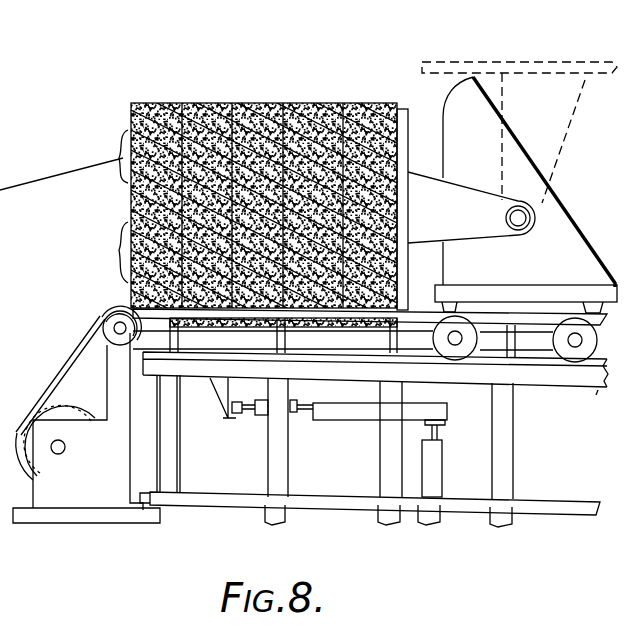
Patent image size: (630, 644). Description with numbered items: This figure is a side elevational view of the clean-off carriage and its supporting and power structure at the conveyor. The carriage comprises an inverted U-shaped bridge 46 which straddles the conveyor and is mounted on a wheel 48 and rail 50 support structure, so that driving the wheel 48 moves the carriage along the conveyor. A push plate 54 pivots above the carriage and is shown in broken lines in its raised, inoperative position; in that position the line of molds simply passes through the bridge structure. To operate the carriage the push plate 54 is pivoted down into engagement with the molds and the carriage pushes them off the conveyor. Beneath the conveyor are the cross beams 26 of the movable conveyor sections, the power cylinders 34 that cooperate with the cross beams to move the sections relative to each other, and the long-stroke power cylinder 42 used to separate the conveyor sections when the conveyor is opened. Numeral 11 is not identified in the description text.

The stack of blocks 11 is at (165, 103).
The cross beam 26 is at (213, 387).
The power cylinder 34 is at (262, 415).
The power cylinder 42 is at (338, 420).
The inverted U-shaped bridge 46 is at (548, 196).
The wheel 48 is at (563, 358).
The rail 50 is at (598, 390).
The push plate 54 is at (498, 62).